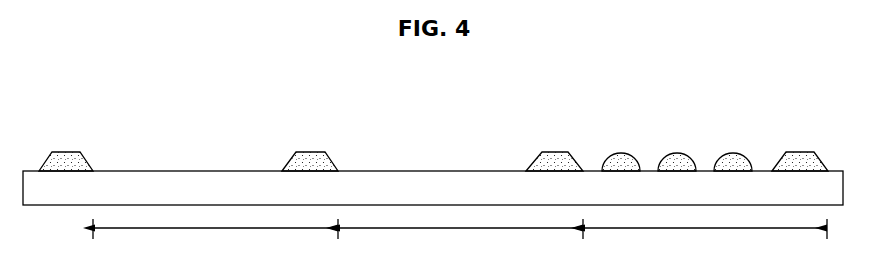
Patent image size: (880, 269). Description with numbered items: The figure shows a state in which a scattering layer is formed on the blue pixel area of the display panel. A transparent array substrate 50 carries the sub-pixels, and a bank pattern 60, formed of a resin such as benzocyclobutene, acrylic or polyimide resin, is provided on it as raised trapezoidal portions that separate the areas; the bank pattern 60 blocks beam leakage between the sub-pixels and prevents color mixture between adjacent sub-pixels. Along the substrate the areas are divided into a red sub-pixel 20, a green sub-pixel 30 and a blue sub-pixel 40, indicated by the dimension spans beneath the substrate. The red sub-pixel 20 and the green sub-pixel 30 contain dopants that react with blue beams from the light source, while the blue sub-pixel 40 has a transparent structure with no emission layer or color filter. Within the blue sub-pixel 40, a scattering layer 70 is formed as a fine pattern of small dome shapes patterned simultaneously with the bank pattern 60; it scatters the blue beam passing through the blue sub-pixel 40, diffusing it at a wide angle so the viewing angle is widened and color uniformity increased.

The array substrate 50 is at (170, 180).
The bank pattern 60 is at (310, 160).
The scattering layer 70 is at (675, 158).
The red sub-pixel 20 is at (215, 238).
The green sub-pixel 30 is at (461, 238).
The blue sub-pixel 40 is at (705, 238).